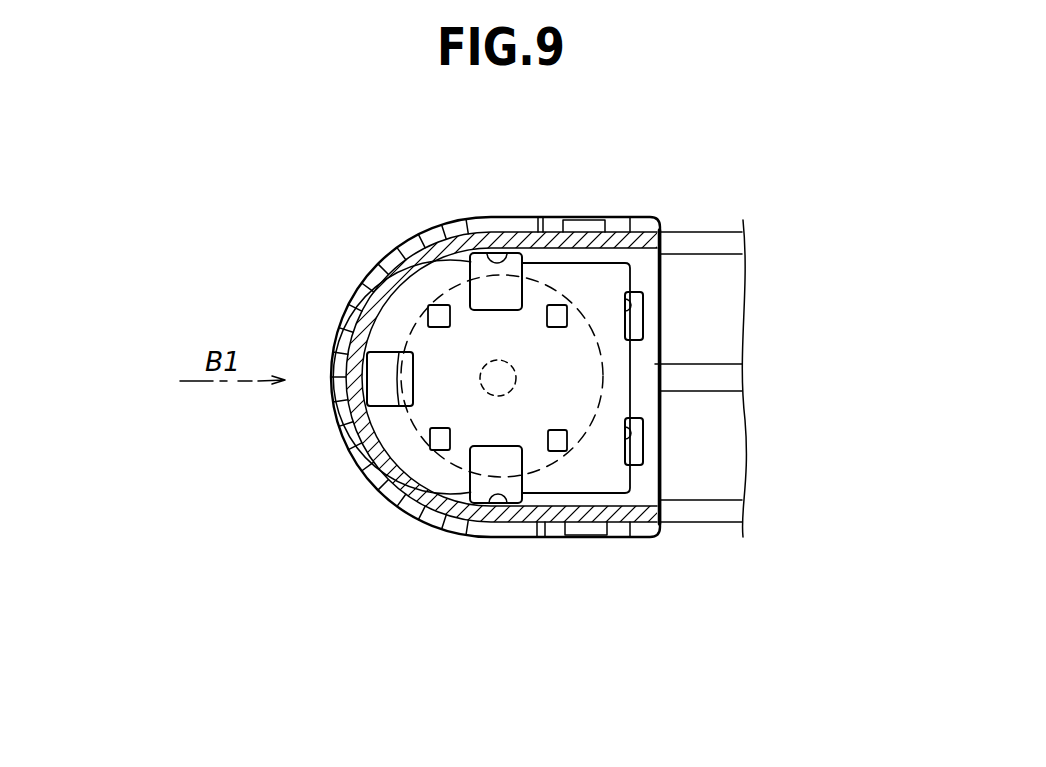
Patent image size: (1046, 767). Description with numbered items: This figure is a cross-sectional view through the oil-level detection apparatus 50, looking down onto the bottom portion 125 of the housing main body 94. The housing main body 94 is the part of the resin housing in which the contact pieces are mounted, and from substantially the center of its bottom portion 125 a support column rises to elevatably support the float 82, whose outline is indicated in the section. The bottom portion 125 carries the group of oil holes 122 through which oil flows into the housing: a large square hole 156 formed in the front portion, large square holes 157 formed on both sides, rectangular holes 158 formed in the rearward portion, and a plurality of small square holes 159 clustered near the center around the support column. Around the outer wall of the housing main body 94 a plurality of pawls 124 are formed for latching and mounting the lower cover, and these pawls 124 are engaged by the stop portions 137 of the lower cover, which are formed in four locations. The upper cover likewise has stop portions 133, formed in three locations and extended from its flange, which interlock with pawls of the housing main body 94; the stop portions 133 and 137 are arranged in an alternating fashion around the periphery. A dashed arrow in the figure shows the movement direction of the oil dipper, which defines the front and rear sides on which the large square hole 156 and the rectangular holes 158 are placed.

The oil-level detection apparatus 50 is at (189, 122).
The float 82 is at (403, 335).
The housing main body 94 is at (560, 410).
The group of oil holes 122 is at (347, 398).
The pawls 124 is at (370, 268).
The bottom portion 125 is at (615, 372).
The stop portions 133 is at (333, 355).
The stop portions 137 is at (390, 253).
The large square hole 156 is at (351, 430).
The large square holes 157 is at (492, 240).
The rectangular holes 158 is at (640, 303).
The small square holes 159 is at (432, 306).